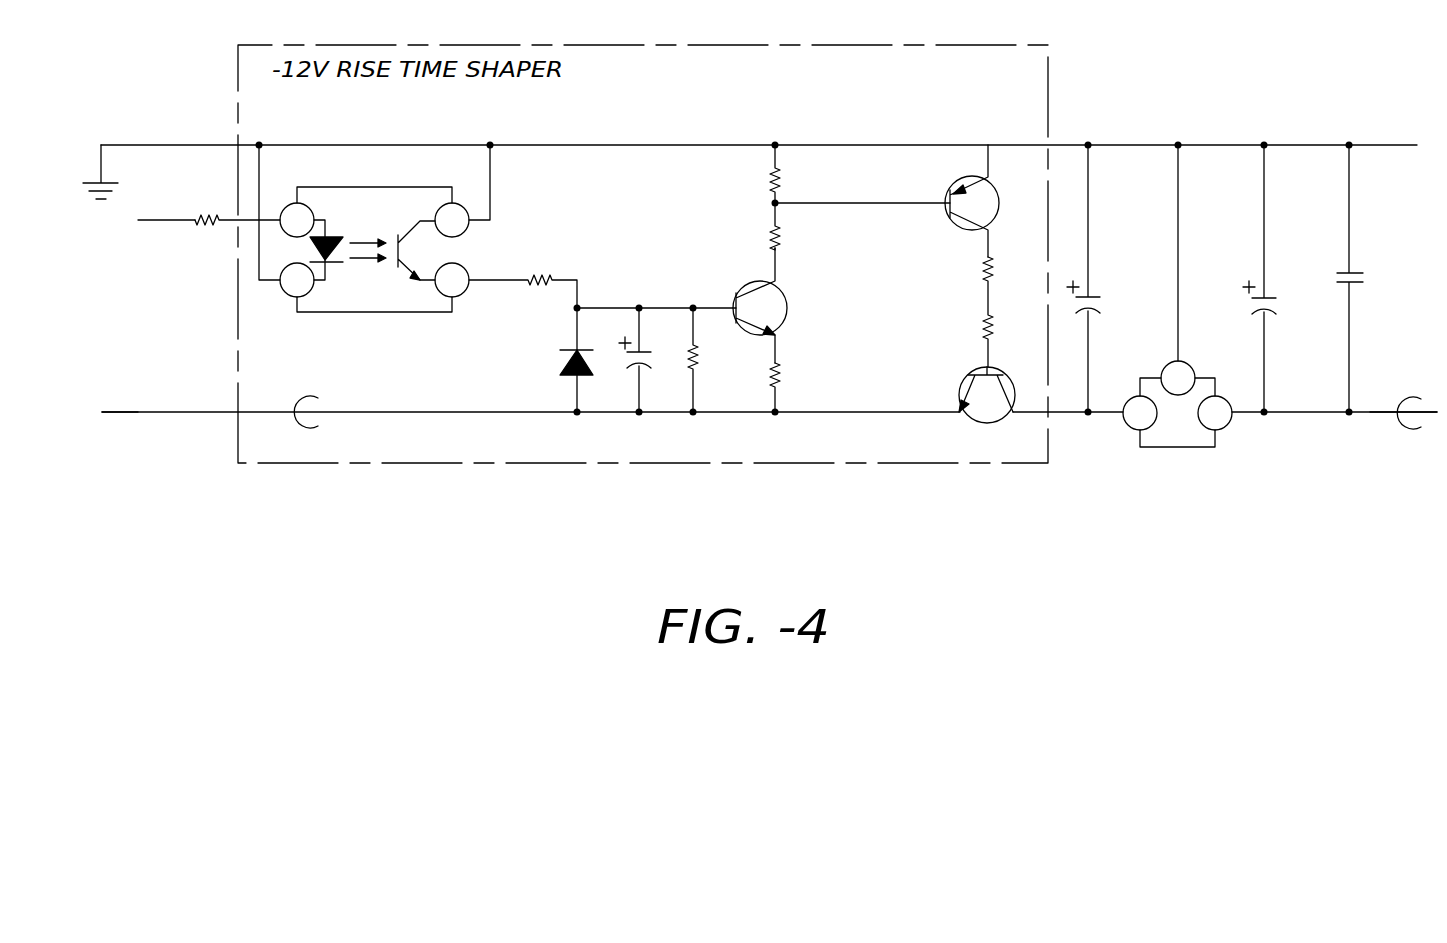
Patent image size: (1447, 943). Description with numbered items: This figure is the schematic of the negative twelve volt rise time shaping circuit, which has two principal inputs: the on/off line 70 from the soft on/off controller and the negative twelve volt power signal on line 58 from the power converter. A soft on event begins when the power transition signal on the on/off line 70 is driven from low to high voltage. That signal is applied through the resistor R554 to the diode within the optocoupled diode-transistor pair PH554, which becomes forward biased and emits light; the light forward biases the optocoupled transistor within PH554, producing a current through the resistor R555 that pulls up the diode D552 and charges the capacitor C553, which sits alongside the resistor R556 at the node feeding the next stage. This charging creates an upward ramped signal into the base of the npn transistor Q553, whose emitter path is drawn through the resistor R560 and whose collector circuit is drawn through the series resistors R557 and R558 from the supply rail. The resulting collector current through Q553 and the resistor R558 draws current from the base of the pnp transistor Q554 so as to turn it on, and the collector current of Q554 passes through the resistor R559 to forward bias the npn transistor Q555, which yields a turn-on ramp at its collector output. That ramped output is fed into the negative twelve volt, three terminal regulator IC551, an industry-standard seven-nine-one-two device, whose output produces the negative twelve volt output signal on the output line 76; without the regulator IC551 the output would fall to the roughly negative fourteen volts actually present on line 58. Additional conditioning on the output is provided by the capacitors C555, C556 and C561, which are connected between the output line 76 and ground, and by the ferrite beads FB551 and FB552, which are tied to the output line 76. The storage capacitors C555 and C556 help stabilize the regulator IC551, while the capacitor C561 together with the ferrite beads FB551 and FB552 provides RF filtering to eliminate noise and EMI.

The on/off line 70 is at (168, 227).
The −12 volt power signal line 58 is at (162, 413).
The −12 volt output line 76 is at (1368, 419).
The resistor R554 is at (226, 209).
The optocoupled diode-transistor pair PH554 is at (374, 247).
The resistor R555 is at (523, 331).
The diode D552 is at (542, 363).
The capacitor C553 is at (656, 350).
The resistor R556 is at (719, 360).
The npn transistor Q553 is at (788, 305).
The resistor R557 is at (741, 174).
The resistor R558 is at (741, 226).
The resistor R560 is at (803, 387).
The pnp transistor Q554 is at (887, 201).
The resistor R559 is at (955, 312).
The npn transistor Q555 is at (987, 409).
The storage capacitor C555 is at (1112, 278).
The −12 volt three terminal regulator IC551 is at (1208, 316).
The storage capacitor C556 is at (1285, 278).
The capacitor C561 is at (1377, 278).
The ferrite bead FB551 is at (308, 427).
The ferrite bead FB552 is at (1395, 429).